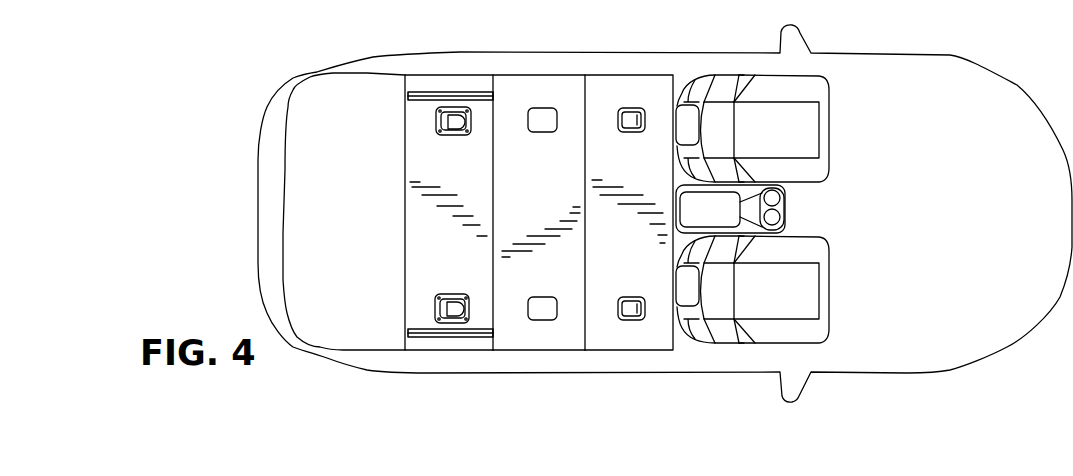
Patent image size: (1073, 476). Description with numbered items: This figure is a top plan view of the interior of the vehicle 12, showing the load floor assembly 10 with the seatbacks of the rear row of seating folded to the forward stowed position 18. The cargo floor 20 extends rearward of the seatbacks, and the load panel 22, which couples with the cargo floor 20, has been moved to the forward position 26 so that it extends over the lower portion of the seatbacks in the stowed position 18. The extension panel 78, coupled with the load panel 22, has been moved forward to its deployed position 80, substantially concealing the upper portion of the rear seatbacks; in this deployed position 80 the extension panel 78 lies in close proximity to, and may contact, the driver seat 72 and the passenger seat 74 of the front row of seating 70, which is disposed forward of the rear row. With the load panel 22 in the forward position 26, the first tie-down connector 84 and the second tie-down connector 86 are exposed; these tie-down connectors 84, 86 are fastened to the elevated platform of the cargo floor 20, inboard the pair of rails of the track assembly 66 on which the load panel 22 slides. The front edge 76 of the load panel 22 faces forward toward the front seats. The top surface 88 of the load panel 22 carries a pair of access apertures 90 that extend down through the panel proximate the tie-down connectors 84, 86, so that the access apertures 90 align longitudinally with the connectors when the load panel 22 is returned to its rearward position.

The load floor assembly 10 is at (379, 191).
The vehicle 12 is at (975, 104).
The stowed position 18 is at (580, 361).
The cargo floor 20 is at (441, 264).
The load panel 22 is at (528, 195).
The forward position 26 is at (540, 86).
The rail 66 is at (420, 92).
The front row of seating 70 is at (767, 73).
The driver seat 72 is at (800, 135).
The passenger seat 74 is at (800, 303).
The front edge 76 is at (730, 209).
The extension panel 78 is at (619, 252).
The deployed position 80 is at (627, 86).
The first tie-down connector 84 is at (469, 324).
The second tie-down connector 86 is at (456, 107).
The top surface 88 is at (542, 328).
The access apertures 90 is at (536, 133).